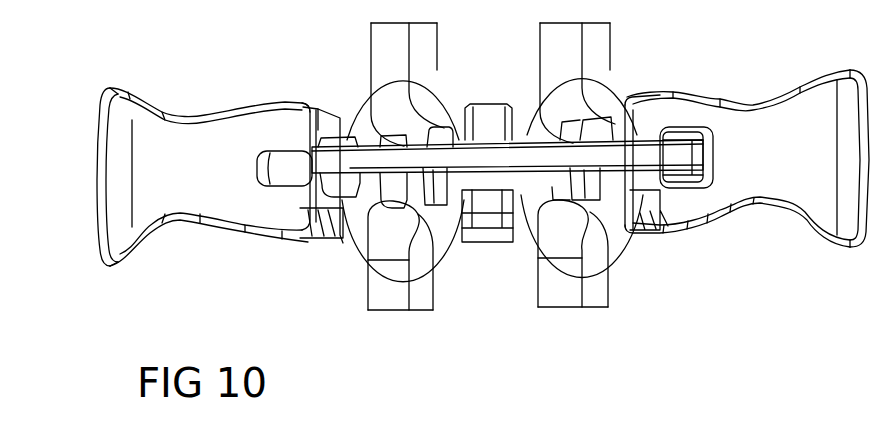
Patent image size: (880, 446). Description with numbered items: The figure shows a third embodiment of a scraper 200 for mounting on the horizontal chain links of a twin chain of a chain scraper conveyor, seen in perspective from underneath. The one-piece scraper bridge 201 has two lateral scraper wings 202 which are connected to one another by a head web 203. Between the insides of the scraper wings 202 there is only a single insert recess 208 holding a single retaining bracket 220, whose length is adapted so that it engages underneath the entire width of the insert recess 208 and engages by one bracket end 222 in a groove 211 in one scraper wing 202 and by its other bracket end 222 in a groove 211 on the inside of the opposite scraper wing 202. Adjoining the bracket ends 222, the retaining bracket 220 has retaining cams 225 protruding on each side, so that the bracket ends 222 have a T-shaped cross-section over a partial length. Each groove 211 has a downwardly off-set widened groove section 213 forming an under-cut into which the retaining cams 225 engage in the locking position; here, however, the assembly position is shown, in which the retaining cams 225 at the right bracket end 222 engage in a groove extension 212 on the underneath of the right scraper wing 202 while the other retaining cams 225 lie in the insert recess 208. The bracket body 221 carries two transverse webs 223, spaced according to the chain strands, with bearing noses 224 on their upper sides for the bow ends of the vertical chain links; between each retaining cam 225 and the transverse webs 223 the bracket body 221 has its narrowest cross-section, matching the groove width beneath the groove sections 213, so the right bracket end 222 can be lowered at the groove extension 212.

The scraper 200 is at (98, 292).
The scraper bridge 201 is at (144, 77).
The scraper wings 202 is at (244, 130).
The head web 203 is at (486, 242).
The insert recess 208 is at (358, 257).
The groove 211 is at (259, 191).
The groove extension 212 is at (713, 177).
The widened groove section 213 is at (323, 217).
The retaining bracket 220 is at (495, 133).
The bracket body 221 is at (632, 98).
The bracket end 222 is at (310, 160).
The transverse webs 223 is at (421, 191).
The bearing noses 224 is at (441, 128).
The retaining cams 225 is at (335, 128).